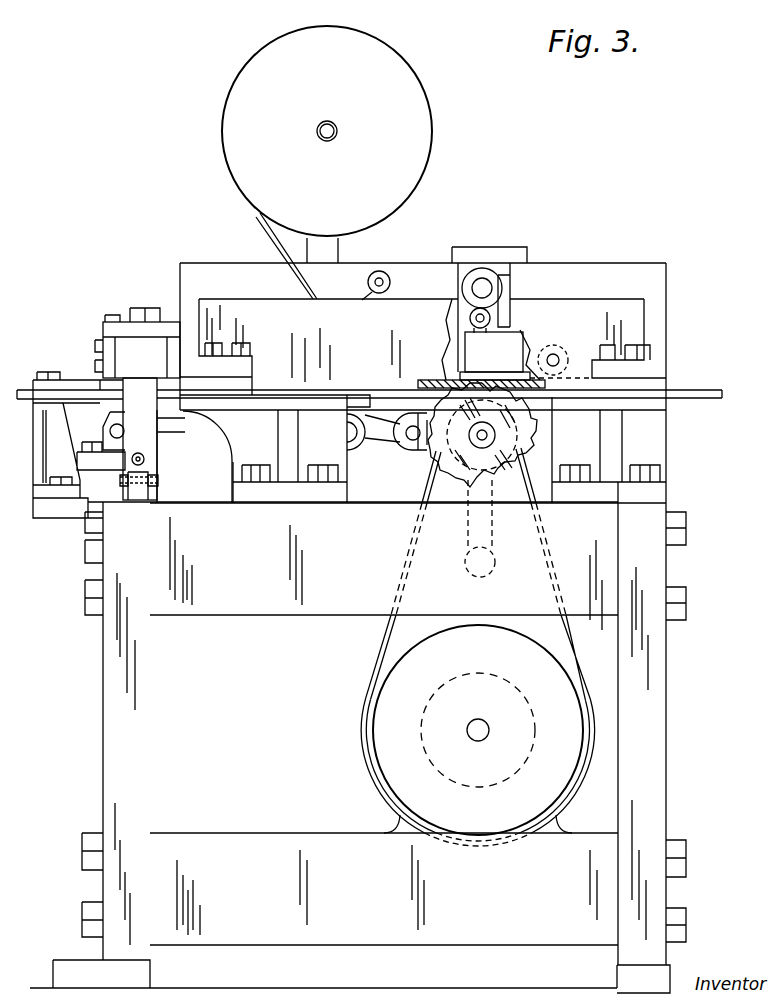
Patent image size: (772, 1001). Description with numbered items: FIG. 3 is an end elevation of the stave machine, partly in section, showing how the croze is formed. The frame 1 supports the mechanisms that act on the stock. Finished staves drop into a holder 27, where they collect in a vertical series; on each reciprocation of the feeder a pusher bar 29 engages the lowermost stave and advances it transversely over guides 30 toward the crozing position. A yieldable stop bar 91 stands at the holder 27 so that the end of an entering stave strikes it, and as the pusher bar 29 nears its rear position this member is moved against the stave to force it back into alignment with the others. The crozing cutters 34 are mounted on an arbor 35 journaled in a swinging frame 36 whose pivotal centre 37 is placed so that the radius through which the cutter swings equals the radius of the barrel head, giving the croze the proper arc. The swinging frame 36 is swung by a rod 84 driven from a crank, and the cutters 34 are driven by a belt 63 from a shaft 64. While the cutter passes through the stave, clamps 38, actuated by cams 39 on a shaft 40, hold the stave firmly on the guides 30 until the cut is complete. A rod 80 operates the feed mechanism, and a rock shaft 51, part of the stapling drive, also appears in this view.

The frame 1 is at (118, 741).
The holder 27 is at (118, 372).
The pusher bar 29 is at (67, 380).
The guides 30 is at (400, 450).
The crozing cutters 34 is at (500, 385).
The arbor 35 is at (470, 445).
The swinging frame 36 is at (452, 497).
The pivotal centre 37 is at (502, 560).
The clamps 38 is at (526, 356).
The cams 39 is at (488, 273).
The shaft 40 is at (480, 280).
The rock shaft 51 is at (383, 270).
The belt 63 is at (380, 630).
The shaft 64 is at (490, 733).
The rod 80 is at (182, 425).
The rod 84 is at (382, 427).
The yieldable stop bar 91 is at (131, 439).